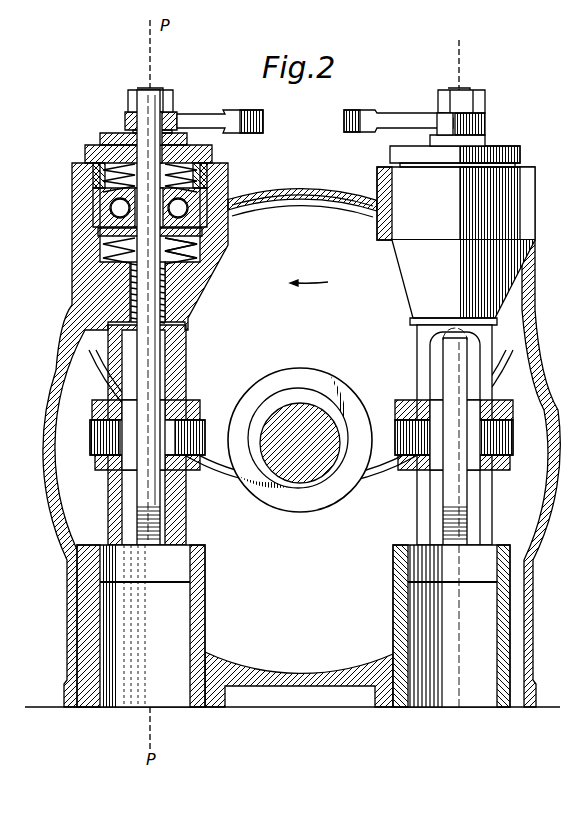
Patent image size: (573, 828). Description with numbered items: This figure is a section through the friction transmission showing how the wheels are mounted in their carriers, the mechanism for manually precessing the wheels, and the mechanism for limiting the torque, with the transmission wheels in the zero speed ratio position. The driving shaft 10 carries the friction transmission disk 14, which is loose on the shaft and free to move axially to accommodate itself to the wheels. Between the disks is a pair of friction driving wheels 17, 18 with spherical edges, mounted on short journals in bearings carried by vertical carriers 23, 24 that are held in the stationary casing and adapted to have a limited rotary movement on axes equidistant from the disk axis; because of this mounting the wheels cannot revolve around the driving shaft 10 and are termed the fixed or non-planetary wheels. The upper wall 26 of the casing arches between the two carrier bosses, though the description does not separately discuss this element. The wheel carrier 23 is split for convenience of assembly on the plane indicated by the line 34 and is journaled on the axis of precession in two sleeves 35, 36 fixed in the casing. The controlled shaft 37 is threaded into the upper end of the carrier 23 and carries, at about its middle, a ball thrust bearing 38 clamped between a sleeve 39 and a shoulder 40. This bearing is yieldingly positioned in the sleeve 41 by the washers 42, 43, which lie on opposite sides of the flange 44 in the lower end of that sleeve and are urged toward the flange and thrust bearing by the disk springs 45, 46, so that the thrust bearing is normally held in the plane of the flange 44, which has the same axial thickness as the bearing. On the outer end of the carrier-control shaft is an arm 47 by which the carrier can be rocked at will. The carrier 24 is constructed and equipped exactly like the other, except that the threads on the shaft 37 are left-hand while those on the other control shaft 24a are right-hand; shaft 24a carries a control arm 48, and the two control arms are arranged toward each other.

The driving shaft 10 is at (320, 458).
The friction transmission disk 14 is at (301, 435).
The friction driving wheel 17 is at (155, 375).
The friction driving wheel 18 is at (448, 485).
The wheel carrier 23 is at (187, 355).
The wheel carrier 24 is at (418, 370).
The control shaft 24a is at (462, 92).
The casing top wall 26 is at (318, 190).
The plane line 34 is at (143, 570).
The sleeve 35 is at (203, 600).
The sleeve 36 is at (190, 290).
The controlled shaft 37 is at (133, 288).
The ball thrust bearing 38 is at (100, 218).
The sleeve 39 is at (128, 137).
The shoulder 40 is at (100, 234).
The sleeve 41 is at (103, 181).
The washer 42 is at (200, 243).
The washer 43 is at (110, 200).
The flange 44 is at (187, 212).
The disk spring 45 is at (103, 255).
The disk spring 46 is at (100, 153).
The arm 47 is at (193, 120).
The control arm 48 is at (408, 118).